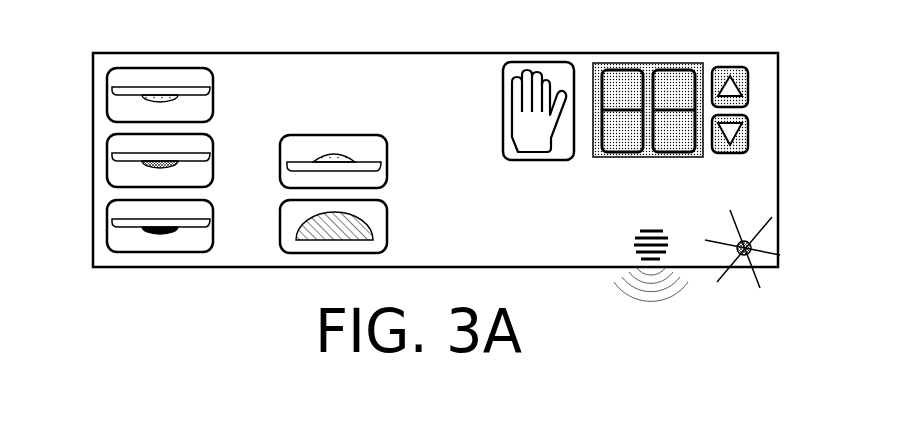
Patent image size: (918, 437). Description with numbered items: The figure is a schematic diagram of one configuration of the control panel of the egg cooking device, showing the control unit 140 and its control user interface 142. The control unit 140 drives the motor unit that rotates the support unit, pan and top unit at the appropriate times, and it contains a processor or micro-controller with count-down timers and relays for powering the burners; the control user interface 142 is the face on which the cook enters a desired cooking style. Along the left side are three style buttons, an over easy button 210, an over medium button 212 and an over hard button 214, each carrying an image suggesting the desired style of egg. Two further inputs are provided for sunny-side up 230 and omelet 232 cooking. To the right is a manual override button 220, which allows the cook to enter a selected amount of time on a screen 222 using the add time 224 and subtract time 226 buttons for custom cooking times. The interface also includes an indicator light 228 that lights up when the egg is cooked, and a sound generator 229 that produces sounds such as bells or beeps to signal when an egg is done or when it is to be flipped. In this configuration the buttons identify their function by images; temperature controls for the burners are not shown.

The control unit 140 is at (322, 46).
The control user interface 142 is at (401, 92).
The over easy button 210 is at (112, 90).
The over medium button 212 is at (112, 156).
The over hard button 214 is at (112, 221).
The manual override button 220 is at (522, 120).
The screen 222 is at (642, 68).
The add time button 224 is at (748, 88).
The subtract time button 226 is at (748, 132).
The indicator light 228 is at (752, 246).
The sound generator 229 is at (650, 230).
The sunny-side up button 230 is at (292, 167).
The omelet button 232 is at (298, 228).